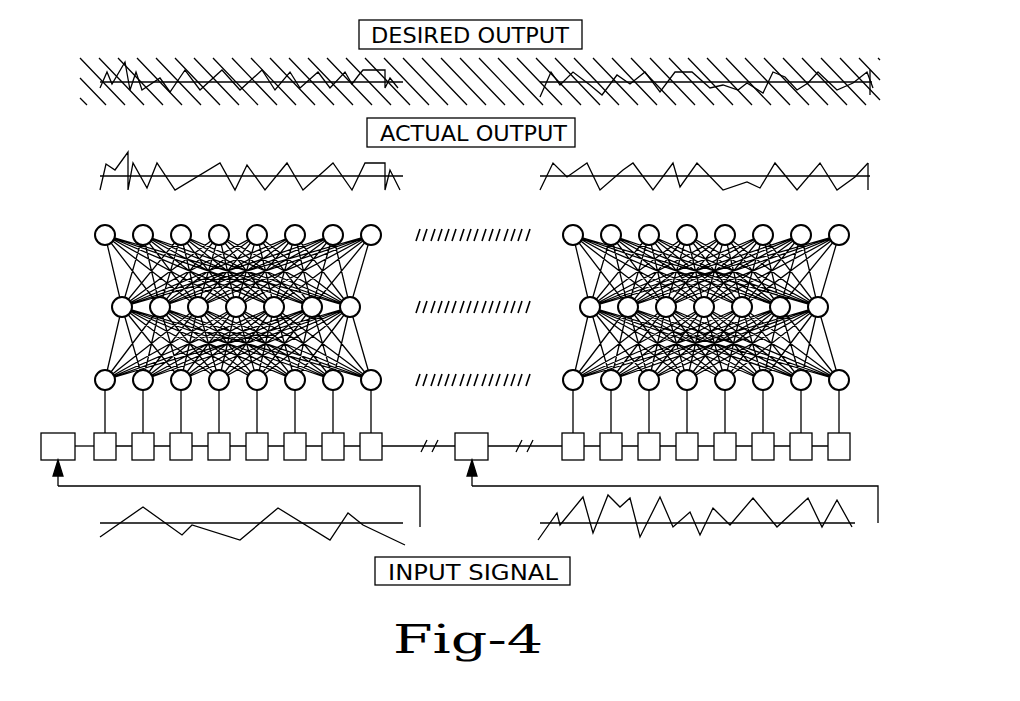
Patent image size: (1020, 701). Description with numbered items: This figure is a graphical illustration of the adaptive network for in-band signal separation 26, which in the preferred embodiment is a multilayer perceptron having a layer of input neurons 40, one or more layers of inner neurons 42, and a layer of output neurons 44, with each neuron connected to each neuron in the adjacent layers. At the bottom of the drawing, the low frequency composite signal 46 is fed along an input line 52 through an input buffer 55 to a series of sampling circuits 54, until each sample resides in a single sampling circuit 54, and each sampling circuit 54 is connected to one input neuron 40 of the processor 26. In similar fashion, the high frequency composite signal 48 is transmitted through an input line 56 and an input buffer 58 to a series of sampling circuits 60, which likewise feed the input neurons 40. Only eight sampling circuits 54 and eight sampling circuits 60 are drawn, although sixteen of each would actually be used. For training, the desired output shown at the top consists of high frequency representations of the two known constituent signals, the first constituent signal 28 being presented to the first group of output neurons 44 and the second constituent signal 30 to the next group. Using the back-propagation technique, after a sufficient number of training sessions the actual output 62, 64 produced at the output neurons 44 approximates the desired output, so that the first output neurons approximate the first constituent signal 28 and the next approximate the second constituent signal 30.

The adaptive network for in-band signal separation 26 is at (240, 311).
The first constituent signal 28 is at (68, 72).
The second constituent signal 30 is at (858, 58).
The input neurons 40 is at (378, 386).
The inner neurons 42 is at (362, 308).
The output neurons 44 is at (382, 235).
The low frequency composite signal 46 is at (100, 538).
The high frequency composite signal 48 is at (540, 535).
The input line 52 is at (388, 488).
The sampling circuits 54 is at (395, 440).
The input buffer 55 is at (60, 432).
The input line 56 is at (880, 512).
The input buffer 58 is at (473, 432).
The sampling circuits 60 is at (855, 446).
The actual output 62 is at (410, 178).
The actual output 64 is at (810, 160).